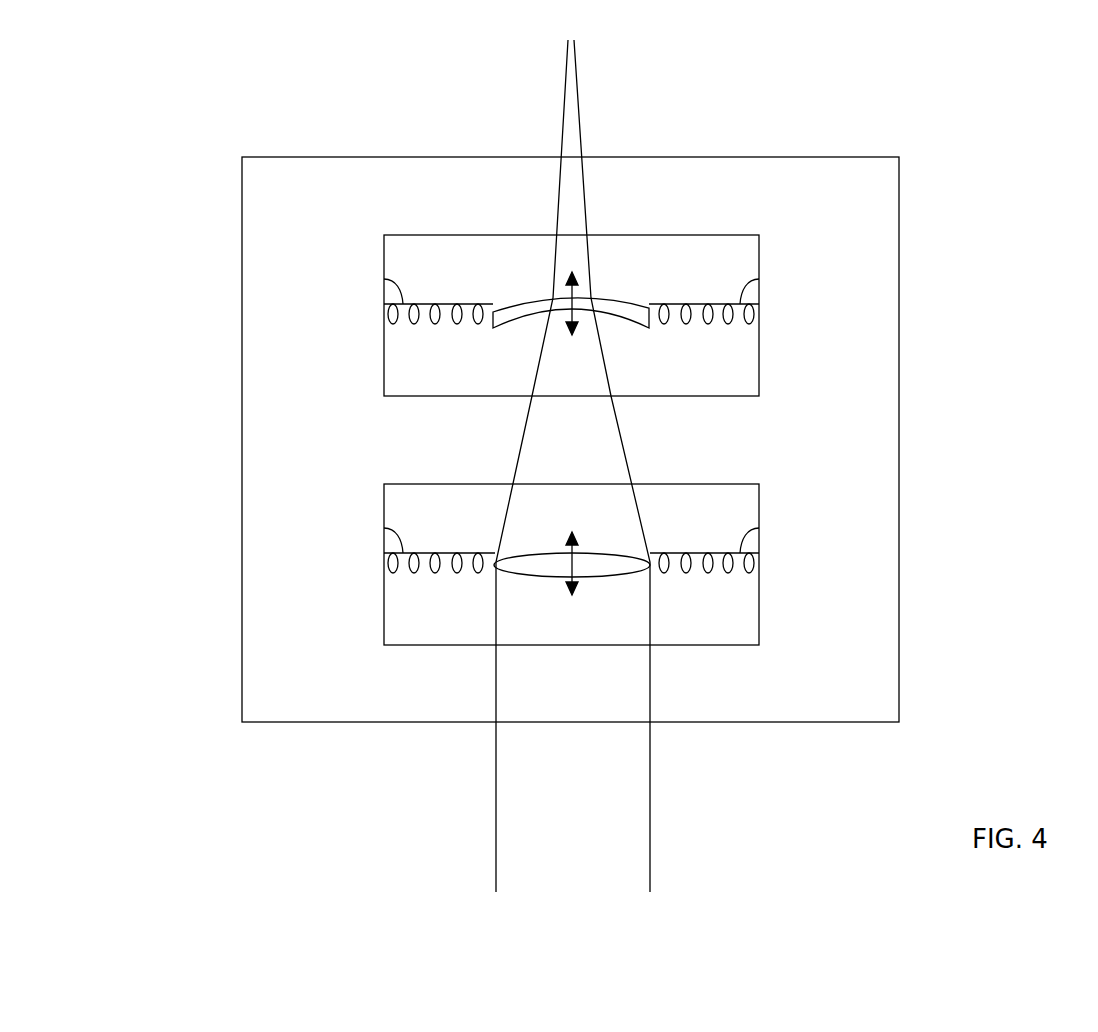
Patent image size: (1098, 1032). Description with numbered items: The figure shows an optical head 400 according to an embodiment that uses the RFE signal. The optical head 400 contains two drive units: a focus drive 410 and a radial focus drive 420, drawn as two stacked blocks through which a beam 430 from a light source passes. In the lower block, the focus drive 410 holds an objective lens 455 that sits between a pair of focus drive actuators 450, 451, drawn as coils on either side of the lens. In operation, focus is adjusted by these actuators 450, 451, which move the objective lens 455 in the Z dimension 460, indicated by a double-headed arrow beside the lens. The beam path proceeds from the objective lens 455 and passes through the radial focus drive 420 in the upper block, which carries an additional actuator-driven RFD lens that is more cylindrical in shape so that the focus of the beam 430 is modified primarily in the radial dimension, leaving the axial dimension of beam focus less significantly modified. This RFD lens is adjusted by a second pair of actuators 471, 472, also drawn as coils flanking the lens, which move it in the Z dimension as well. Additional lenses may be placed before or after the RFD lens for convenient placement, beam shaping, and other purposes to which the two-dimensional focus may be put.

The optical head 400 is at (242, 226).
The focus drive 410 is at (759, 563).
The radial focus drive 420 is at (759, 317).
The beam 430 is at (608, 855).
The focus drive actuator 450 is at (759, 528).
The focus drive actuator 451 is at (384, 528).
The objective lens 455 is at (613, 553).
The Z dimension 460 is at (610, 299).
The actuator 471 is at (384, 279).
The actuator 472 is at (759, 279).